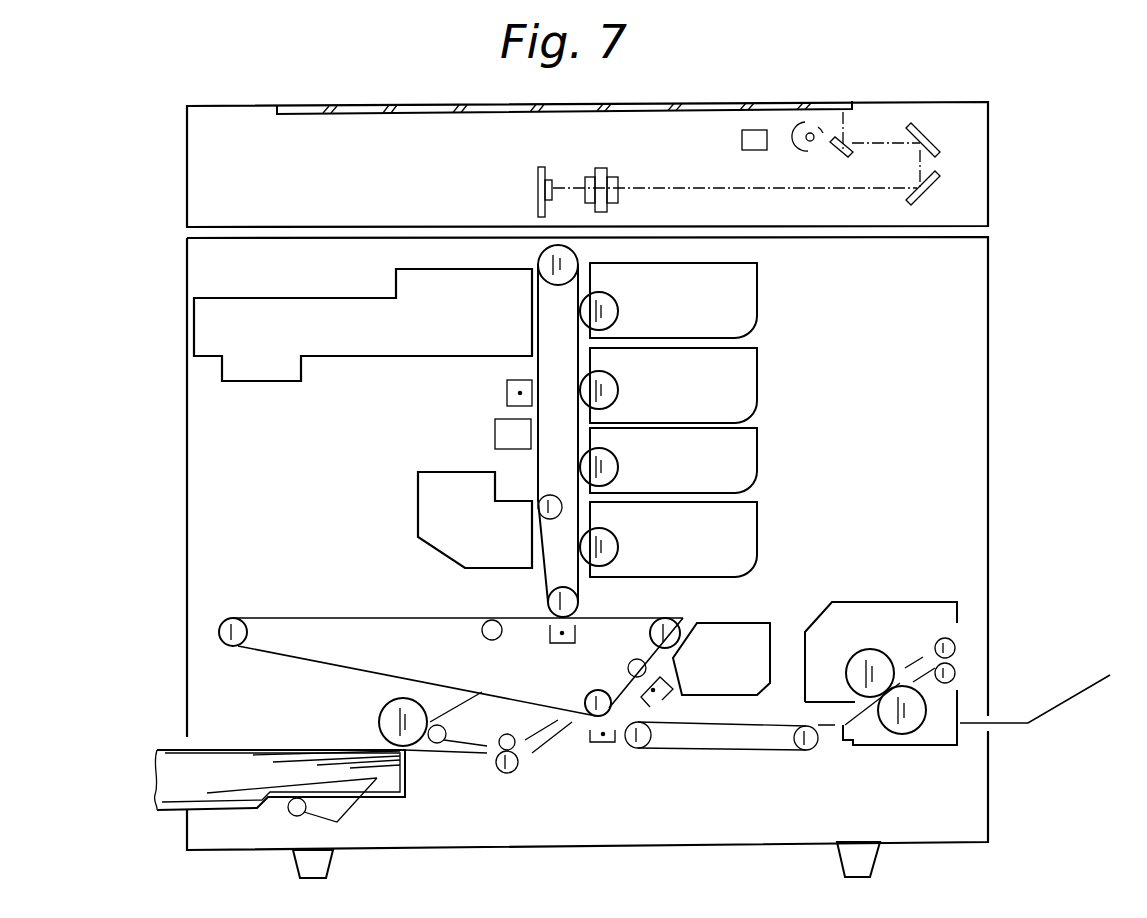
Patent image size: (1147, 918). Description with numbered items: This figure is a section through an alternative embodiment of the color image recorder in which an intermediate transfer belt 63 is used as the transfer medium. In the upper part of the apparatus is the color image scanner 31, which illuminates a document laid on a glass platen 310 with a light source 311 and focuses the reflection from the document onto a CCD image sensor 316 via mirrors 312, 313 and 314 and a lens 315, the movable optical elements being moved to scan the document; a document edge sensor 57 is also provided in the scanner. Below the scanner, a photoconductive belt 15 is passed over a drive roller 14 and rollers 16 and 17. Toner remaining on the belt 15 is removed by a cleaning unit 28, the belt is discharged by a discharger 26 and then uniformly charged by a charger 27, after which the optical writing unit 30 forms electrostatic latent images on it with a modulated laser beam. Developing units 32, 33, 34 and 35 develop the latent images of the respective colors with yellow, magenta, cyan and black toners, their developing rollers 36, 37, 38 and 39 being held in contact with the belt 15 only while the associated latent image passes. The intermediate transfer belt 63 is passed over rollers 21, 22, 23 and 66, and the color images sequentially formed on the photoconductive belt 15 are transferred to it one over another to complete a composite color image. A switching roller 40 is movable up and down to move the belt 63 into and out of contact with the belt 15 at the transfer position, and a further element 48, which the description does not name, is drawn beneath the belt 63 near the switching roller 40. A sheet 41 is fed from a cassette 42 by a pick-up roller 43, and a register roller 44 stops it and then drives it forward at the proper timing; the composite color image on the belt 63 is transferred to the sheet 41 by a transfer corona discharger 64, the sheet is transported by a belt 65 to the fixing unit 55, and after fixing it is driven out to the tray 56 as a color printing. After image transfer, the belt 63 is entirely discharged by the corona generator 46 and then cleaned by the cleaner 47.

The drive roller 14 is at (557, 590).
The photoconductive belt 15 is at (537, 363).
The roller 16 is at (538, 290).
The roller 17 is at (540, 518).
The drive roller 21 is at (248, 636).
The driven roller 22 is at (672, 626).
The driven roller 23 is at (633, 660).
The discharger 26 is at (495, 437).
The charger 27 is at (507, 393).
The cleaning unit 28 is at (418, 496).
The optical writing unit 30 is at (362, 358).
The color image scanner 31 is at (990, 163).
The developing unit 32 is at (758, 306).
The developing unit 33 is at (758, 393).
The developing unit 34 is at (758, 450).
The developing unit 35 is at (758, 535).
The developing roller 36 is at (618, 308).
The developing roller 37 is at (619, 388).
The developing roller 38 is at (619, 462).
The developing roller 39 is at (619, 542).
The switching roller 40 is at (482, 636).
The sheet 41 is at (318, 750).
The cassette 42 is at (392, 800).
The pick-up roller 43 is at (380, 716).
The register roller 44 is at (507, 773).
The corona generator 46 is at (678, 692).
The cleaner 47 is at (733, 620).
The transfer charger 48 is at (550, 643).
The fixing unit 55 is at (905, 746).
The tray 56 is at (1060, 708).
The document edge sensor 57 is at (742, 148).
The intermediate transfer belt 63 is at (354, 617).
The transfer corona discharger 64 is at (603, 744).
The belt 65 is at (728, 751).
The roller 66 is at (592, 693).
The glass platen 310 is at (416, 114).
The light source 311 is at (808, 152).
The mirror 312 is at (840, 157).
The mirror 313 is at (930, 148).
The mirror 314 is at (928, 196).
The lens 315 is at (602, 168).
The CCD image sensor 316 is at (552, 168).